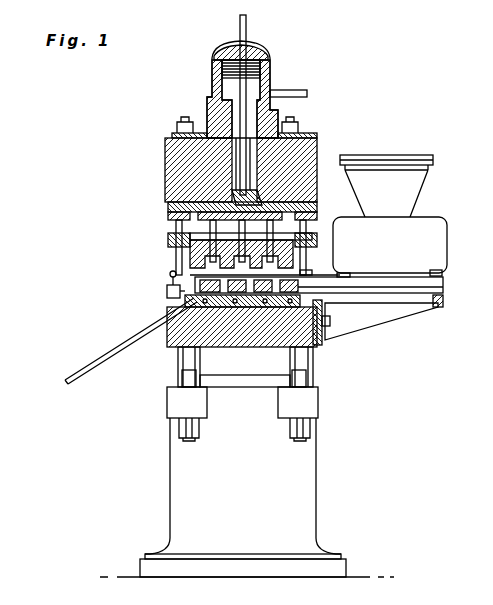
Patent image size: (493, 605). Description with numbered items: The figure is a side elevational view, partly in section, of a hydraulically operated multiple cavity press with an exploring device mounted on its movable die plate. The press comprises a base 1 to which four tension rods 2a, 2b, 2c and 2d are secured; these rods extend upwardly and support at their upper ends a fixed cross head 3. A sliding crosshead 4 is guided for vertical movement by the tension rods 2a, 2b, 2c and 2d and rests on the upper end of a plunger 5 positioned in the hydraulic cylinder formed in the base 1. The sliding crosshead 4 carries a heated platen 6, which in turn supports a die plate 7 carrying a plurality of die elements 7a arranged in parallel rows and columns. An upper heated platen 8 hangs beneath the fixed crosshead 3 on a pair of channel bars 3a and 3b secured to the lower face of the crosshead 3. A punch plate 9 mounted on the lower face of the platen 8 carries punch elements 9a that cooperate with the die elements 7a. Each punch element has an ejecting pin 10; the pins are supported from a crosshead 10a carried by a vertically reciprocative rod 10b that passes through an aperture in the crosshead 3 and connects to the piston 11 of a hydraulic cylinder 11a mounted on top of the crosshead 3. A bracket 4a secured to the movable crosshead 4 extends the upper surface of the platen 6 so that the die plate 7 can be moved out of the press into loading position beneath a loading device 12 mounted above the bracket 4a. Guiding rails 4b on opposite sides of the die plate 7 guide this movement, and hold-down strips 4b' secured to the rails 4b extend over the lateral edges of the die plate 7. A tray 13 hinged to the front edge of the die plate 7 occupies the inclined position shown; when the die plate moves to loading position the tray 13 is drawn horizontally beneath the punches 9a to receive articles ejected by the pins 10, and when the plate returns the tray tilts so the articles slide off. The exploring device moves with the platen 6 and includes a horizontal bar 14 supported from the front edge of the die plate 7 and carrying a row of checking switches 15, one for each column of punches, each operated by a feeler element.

The base 1 is at (318, 465).
The tension rod 2a is at (183, 372).
The tension rod 2b is at (185, 392).
The tension rod 2c is at (313, 357).
The tension rod 2d is at (310, 385).
The fixed cross head 3 is at (165, 163).
The channel bar 3a is at (176, 232).
The channel bar 3b is at (306, 212).
The sliding crosshead 4 is at (168, 342).
The bracket 4a is at (390, 320).
The guiding rails 4b is at (455, 303).
The hold-down strips 4b' is at (454, 269).
The plunger 5 is at (245, 378).
The heated platen 6 is at (305, 290).
The die plate 7 is at (171, 276).
The die elements 7a is at (330, 321).
The upper heated platen 8 is at (176, 253).
The punch plate 9 is at (302, 266).
The punch elements 9a is at (308, 273).
The ejecting pin 10 is at (218, 229).
The crosshead 10a is at (217, 207).
The vertically reciprocative rod 10b is at (246, 122).
The piston 11 is at (268, 72).
The hydraulic cylinder 11a is at (213, 76).
The loading device 12 is at (447, 240).
The tray 13 is at (110, 356).
The horizontal bar 14 is at (180, 301).
The checking switches 15 is at (167, 290).